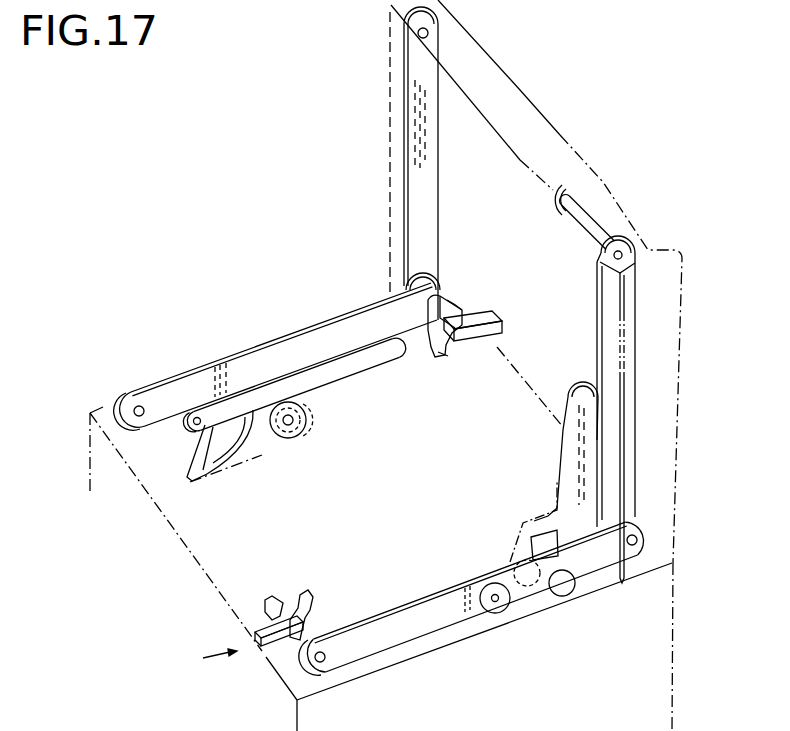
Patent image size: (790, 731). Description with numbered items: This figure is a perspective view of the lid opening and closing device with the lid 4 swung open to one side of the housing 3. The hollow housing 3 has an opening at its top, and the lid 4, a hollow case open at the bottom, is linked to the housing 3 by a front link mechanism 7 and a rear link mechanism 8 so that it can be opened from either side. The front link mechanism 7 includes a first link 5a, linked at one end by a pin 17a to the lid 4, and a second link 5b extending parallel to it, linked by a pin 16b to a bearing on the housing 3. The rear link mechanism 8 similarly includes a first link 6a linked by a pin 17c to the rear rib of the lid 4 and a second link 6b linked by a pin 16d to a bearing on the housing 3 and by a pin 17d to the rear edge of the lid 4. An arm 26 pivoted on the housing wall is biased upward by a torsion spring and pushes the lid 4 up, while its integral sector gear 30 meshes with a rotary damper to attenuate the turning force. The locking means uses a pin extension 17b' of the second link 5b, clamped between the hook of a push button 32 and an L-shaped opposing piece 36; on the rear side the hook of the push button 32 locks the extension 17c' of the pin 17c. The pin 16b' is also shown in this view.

The housing 3 is at (90, 480).
The lid 4 is at (541, 104).
The first link 5a is at (413, 166).
The second link 5b is at (338, 325).
The first link 6a is at (630, 375).
The second link 6b is at (450, 600).
The front link mechanism 7 is at (303, 180).
The rear link mechanism 8 is at (641, 489).
The pin 16b is at (107, 374).
The pin 16d is at (324, 659).
The pin 17a is at (418, 55).
The pin extension 17b' is at (457, 377).
The pin 17c is at (658, 224).
The extension 17c' is at (611, 182).
The pin 17d is at (637, 552).
The arm 26 is at (396, 340).
The sector gear 30 is at (253, 447).
The push button 32 is at (494, 312).
The L-shaped opposing piece 36 is at (463, 295).
The pivot pin 16b' is at (46, 719).